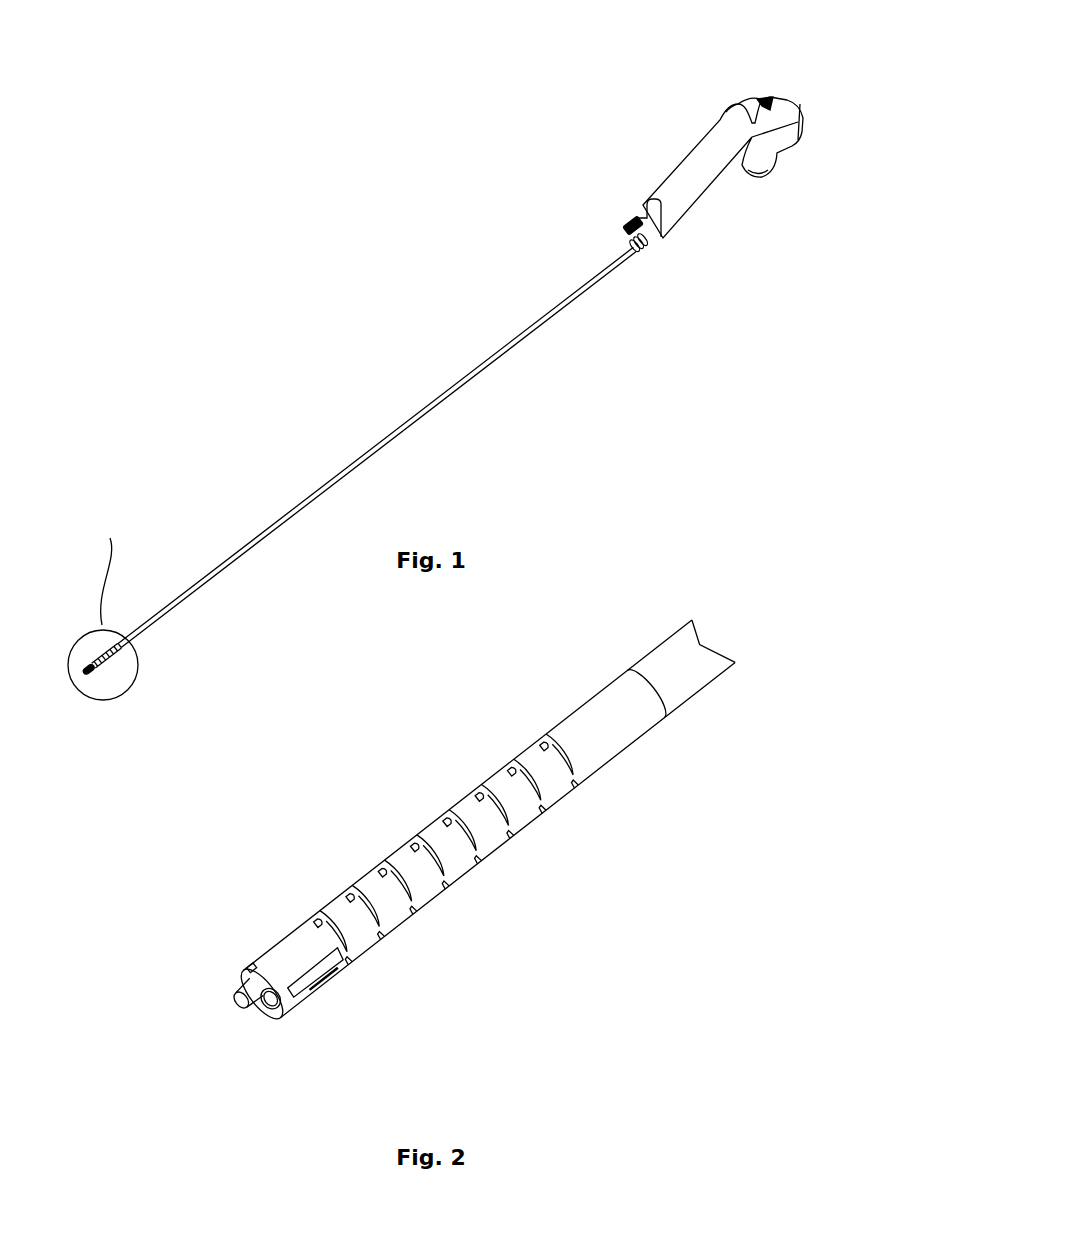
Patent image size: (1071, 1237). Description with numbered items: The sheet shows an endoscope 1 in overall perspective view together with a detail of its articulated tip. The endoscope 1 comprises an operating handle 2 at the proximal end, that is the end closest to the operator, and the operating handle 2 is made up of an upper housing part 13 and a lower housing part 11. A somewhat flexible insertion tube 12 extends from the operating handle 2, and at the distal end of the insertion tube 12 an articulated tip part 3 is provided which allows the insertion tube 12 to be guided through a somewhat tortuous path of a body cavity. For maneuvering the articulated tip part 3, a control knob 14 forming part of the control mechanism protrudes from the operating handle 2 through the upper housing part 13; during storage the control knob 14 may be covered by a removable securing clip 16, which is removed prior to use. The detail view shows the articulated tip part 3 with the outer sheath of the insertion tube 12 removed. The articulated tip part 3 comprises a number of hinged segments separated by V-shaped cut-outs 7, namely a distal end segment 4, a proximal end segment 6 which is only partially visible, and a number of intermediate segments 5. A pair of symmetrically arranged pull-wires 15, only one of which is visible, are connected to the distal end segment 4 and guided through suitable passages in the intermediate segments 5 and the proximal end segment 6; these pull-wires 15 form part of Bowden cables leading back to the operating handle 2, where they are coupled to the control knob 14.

In FIG. 1, the endoscope 1 is at (465, 401).
In FIG. 1, the operating handle 2 is at (731, 170).
In FIG. 1, the articulated tip part 3 is at (113, 675).
In FIG. 2, the articulated tip part 3 is at (517, 860).
In FIG. 2, the distal end segment 4 is at (323, 987).
In FIG. 2, the intermediate segments 5 is at (497, 788).
In FIG. 2, the proximal end segment 6 is at (583, 790).
In FIG. 2, the V-shaped cut-outs 7 is at (437, 817).
In FIG. 1, the lower housing part 11 is at (780, 142).
In FIG. 1, the insertion tube 12 is at (510, 348).
In FIG. 2, the insertion tube 12 is at (698, 683).
In FIG. 1, the upper housing part 13 is at (688, 178).
In FIG. 1, the control knob 14 is at (787, 102).
In FIG. 2, the pull-wires 15 is at (383, 863).
In FIG. 1, the removable securing clip 16 is at (728, 107).